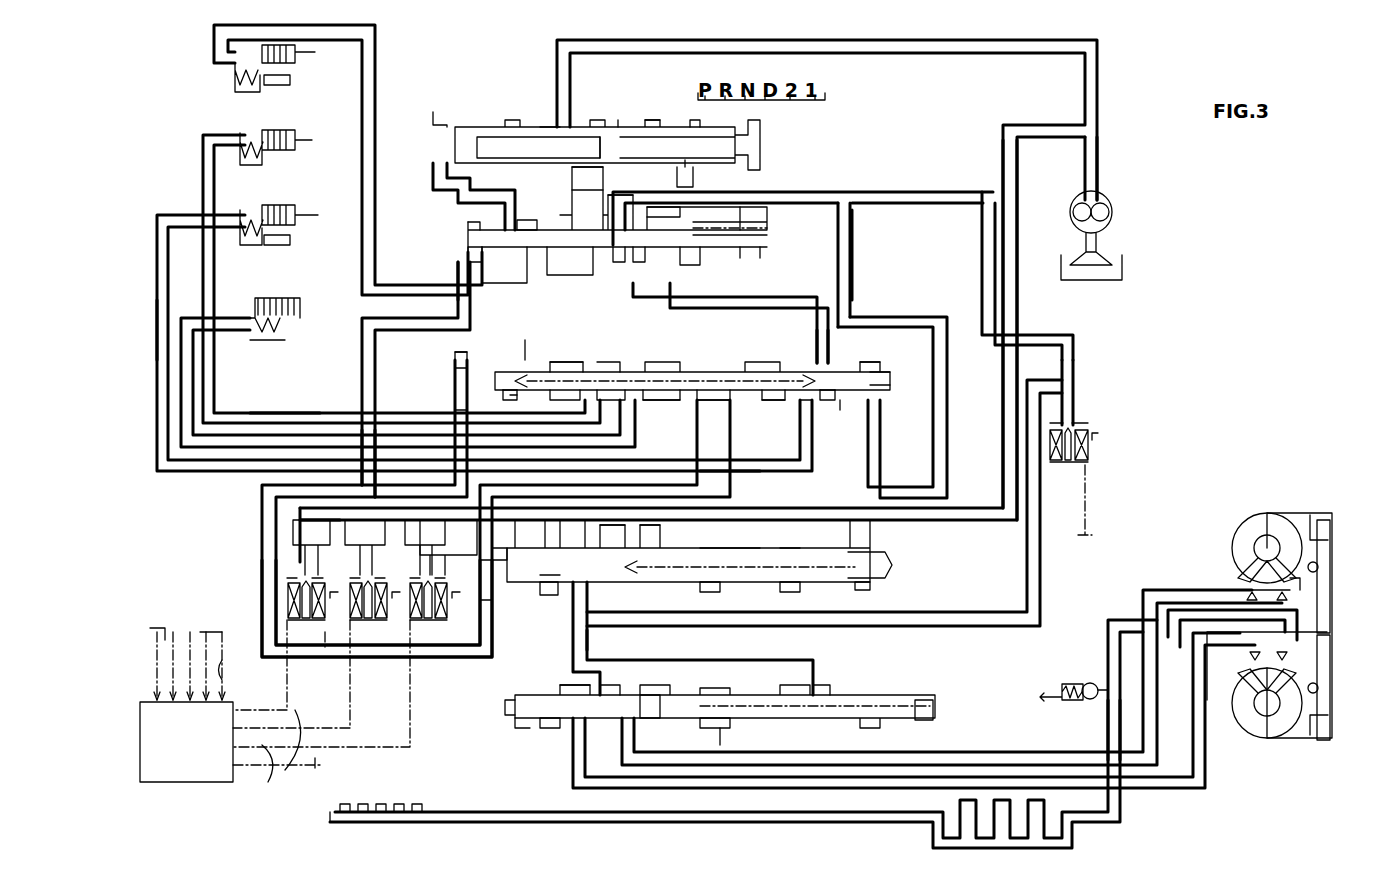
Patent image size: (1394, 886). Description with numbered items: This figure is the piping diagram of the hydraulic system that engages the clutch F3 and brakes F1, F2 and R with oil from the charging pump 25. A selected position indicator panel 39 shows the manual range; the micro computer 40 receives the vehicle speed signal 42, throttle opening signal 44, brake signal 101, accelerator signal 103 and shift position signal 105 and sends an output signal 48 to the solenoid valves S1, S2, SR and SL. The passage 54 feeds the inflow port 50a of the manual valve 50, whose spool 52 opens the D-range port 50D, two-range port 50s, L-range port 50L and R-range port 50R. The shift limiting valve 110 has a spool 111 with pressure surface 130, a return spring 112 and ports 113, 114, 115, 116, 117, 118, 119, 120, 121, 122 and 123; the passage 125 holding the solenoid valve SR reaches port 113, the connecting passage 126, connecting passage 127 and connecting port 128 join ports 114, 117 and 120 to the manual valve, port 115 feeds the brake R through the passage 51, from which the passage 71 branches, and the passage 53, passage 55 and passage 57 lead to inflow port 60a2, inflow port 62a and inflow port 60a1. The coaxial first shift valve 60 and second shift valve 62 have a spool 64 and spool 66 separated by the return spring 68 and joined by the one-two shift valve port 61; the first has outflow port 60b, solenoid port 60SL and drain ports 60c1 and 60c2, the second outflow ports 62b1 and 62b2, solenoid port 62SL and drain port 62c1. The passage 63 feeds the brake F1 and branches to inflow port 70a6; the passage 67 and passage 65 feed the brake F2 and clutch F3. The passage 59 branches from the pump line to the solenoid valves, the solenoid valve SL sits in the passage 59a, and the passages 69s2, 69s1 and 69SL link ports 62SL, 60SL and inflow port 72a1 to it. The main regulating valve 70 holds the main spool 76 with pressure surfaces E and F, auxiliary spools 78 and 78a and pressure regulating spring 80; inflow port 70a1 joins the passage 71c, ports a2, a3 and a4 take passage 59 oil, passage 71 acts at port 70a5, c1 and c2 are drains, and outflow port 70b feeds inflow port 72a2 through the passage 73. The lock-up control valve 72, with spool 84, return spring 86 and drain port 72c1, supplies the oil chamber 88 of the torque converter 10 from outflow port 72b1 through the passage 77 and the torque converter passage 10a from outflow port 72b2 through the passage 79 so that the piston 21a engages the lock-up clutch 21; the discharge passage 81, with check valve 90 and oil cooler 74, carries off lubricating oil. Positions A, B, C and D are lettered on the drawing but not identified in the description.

The torque converter 10 is at (1232, 512).
The torque converter passage 10a is at (1295, 578).
The lock-up clutch 21 is at (1330, 548).
The piston 21a is at (1330, 722).
The charging pump 25 is at (1118, 195).
The selected position indicator panel 39 is at (793, 48).
The micro computer 40 is at (186, 742).
The vehicle speed signal 42 is at (157, 657).
The throttle opening signal 44 is at (157, 688).
The output signal 48 is at (270, 778).
The manual valve 50 is at (520, 110).
The R-range port 50R is at (455, 125).
The inflow port 50a is at (580, 130).
The D-range port 50D is at (620, 125).
The L-range port 50L is at (695, 125).
The 2-range port 50s is at (652, 125).
The passage 51 is at (375, 252).
The spool 52 is at (604, 130).
The passage 53 is at (855, 238).
The passage 54 is at (992, 42).
The passage 55 is at (416, 379).
The passage 57 is at (857, 282).
The passage 59 is at (1017, 245).
The passage 59a is at (1017, 302).
The first shift valve 60 is at (898, 358).
The inflow port 60a1 is at (812, 403).
The inflow port 60a2 is at (765, 403).
The outflow port 60b is at (820, 340).
The drain port 60c1 is at (836, 386).
The drain port 60c2 is at (710, 402).
The solenoid port 60SL is at (870, 360).
The 1-2 shift valve port 61 is at (730, 280).
The second shift valve 62 is at (440, 389).
The inflow port 62a is at (505, 392).
The outflow port 62b1 is at (605, 362).
The outflow port 62b2 is at (470, 285).
The drain port 62c1 is at (560, 362).
The solenoid port 62SL is at (455, 355).
The passage 63 is at (745, 462).
The spool 64 is at (880, 388).
The passage 65 is at (193, 380).
The spool 66 is at (455, 368).
The passage 67 is at (298, 412).
The return spring 68 is at (658, 403).
The passage 69s1 is at (450, 555).
The passage 69s2 is at (320, 545).
The passage 69SL is at (1040, 568).
The main regulating valve 70 is at (903, 568).
The inflow port 70a1 is at (530, 525).
The inflow port 70a5 is at (860, 590).
The inflow port 70a6 is at (878, 535).
The outflow port 70b is at (670, 638).
The passage 71 is at (947, 405).
The passage 71c is at (437, 655).
The lock-up control valve 72 is at (512, 732).
The inflow port 72a1 is at (515, 725).
The inflow port 72a2 is at (610, 685).
The outflow port 72b1 is at (570, 688).
The outflow port 72b2 is at (680, 685).
The drain port 72c1 is at (550, 728).
The passage 73 is at (590, 637).
The oil cooler 74 is at (1038, 845).
The main spool 76 is at (500, 560).
The passage 77 is at (1192, 788).
The auxiliary spool 78 is at (798, 555).
The auxiliary spool 78a is at (728, 586).
The passage 79 is at (1030, 752).
The pressure regulating spring 80 is at (735, 542).
The discharge passage 81 is at (1108, 645).
The spool 84 is at (508, 702).
The return spring 86 is at (728, 728).
The oil chamber 88 is at (1330, 608).
The check valve 90 is at (1088, 682).
The brake signal 101 is at (157, 632).
The accelerator signal 103 is at (232, 632).
The shift position signal 105 is at (222, 680).
The shift limiting valve 110 is at (795, 210).
The spool 111 is at (745, 258).
The return spring 112 is at (768, 258).
The port 113 is at (470, 225).
The port 114 is at (504, 265).
The port 115 is at (530, 225).
The port 116 is at (572, 215).
The port 117 is at (571, 265).
The port 118 is at (620, 210).
The port 119 is at (625, 265).
The port 120 is at (654, 265).
The port 121 is at (678, 210).
The port 122 is at (698, 268).
The port 123 is at (742, 230).
The passage 125 is at (362, 372).
The connecting passage 126 is at (433, 188).
The connecting passage 127 is at (580, 170).
The connecting port 128 is at (688, 175).
The pressure surface 130 is at (470, 258).
The chamber A is at (500, 395).
The chamber B is at (525, 355).
The chamber C is at (822, 398).
The chamber D is at (880, 372).
The pressure surface E is at (485, 598).
The pressure surface F is at (500, 627).
The brake R is at (312, 75).
The brake F1 is at (300, 225).
The brake F2 is at (300, 152).
The clutch F3 is at (300, 325).
The solenoid valve SR is at (285, 644).
The solenoid valve S1 is at (346, 633).
The solenoid valve S2 is at (316, 624).
The solenoid valve SL is at (1073, 447).
The inflow port a2 is at (550, 586).
The inflow port a3 is at (551, 565).
The inflow port a4 is at (606, 536).
The drain port c1 is at (640, 548).
The drain port c2 is at (775, 587).